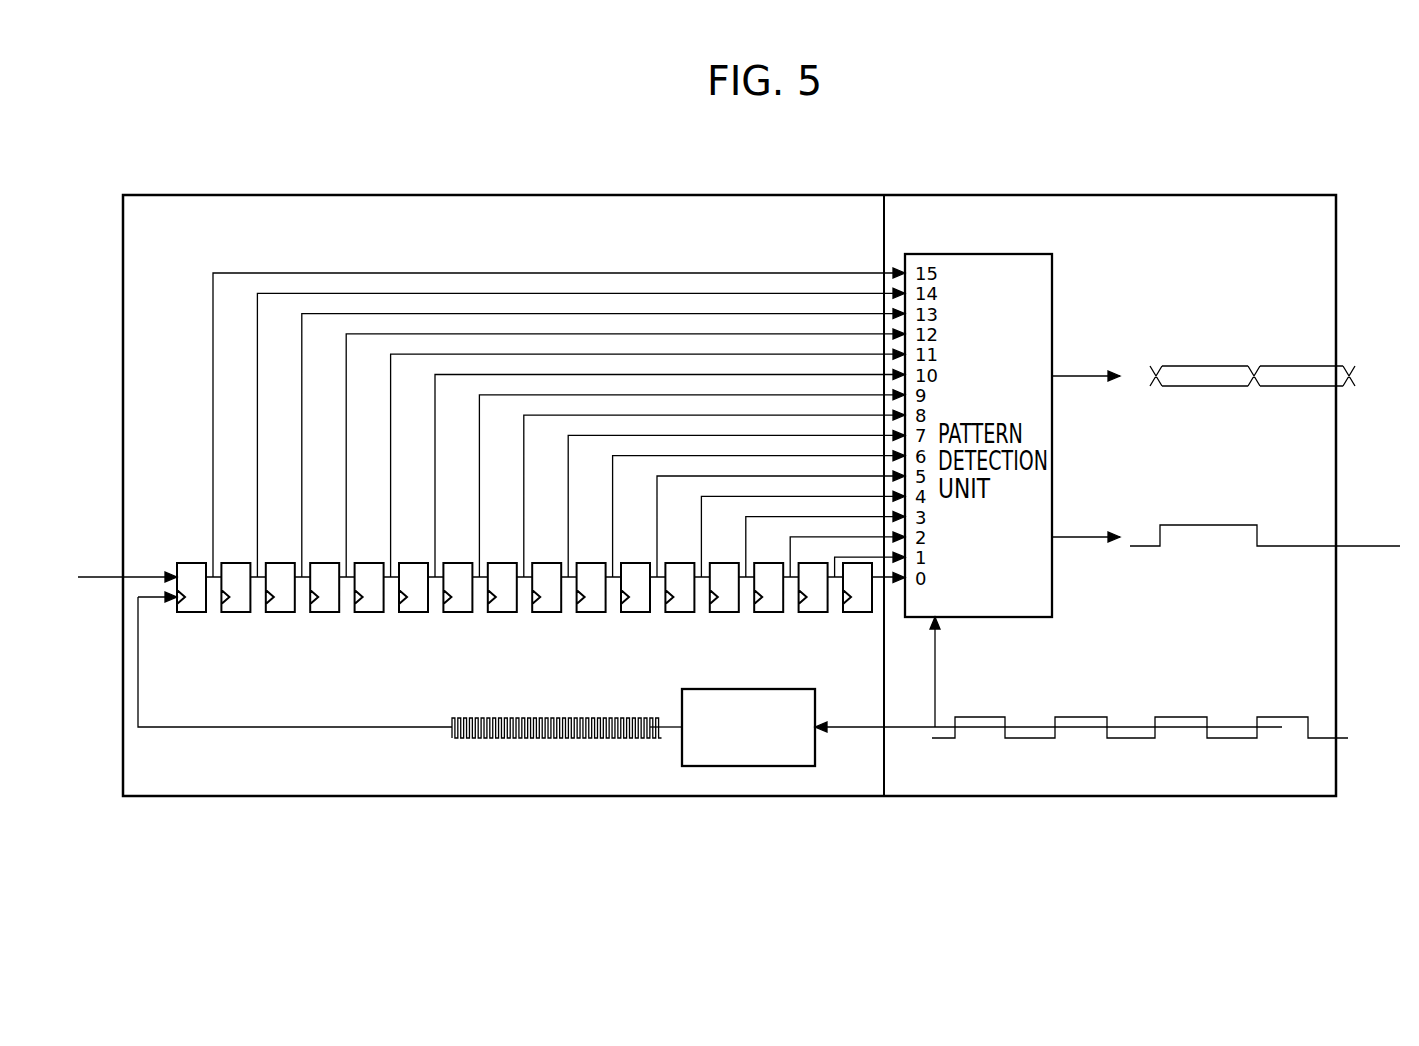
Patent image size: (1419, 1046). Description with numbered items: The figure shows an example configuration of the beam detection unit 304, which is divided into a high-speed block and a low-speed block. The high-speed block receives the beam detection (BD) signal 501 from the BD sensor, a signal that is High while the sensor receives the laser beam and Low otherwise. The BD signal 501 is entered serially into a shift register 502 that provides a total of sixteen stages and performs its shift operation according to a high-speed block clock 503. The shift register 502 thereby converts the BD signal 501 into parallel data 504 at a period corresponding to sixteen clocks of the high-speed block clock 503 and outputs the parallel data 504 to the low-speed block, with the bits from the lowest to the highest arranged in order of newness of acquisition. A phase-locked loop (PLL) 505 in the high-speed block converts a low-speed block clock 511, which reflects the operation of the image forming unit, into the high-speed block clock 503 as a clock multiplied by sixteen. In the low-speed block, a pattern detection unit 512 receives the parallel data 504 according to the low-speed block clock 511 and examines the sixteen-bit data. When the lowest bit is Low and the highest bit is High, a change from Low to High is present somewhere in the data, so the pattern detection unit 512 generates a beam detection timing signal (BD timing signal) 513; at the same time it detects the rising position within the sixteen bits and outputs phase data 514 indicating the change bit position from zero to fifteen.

The beam detection unit 304 is at (935, 194).
The beam detection (BD) signal 501 is at (93, 544).
The shift register 502 is at (313, 620).
The high-speed block clock 503 is at (432, 722).
The parallel data 504 is at (712, 292).
The phase-locked loop (PLL) 505 is at (710, 688).
The low-speed block clock 511 is at (1085, 715).
The pattern detection unit 512 is at (999, 620).
The beam detection timing signal (BD timing signal) 513 is at (1191, 495).
The phase data 514 is at (1191, 331).